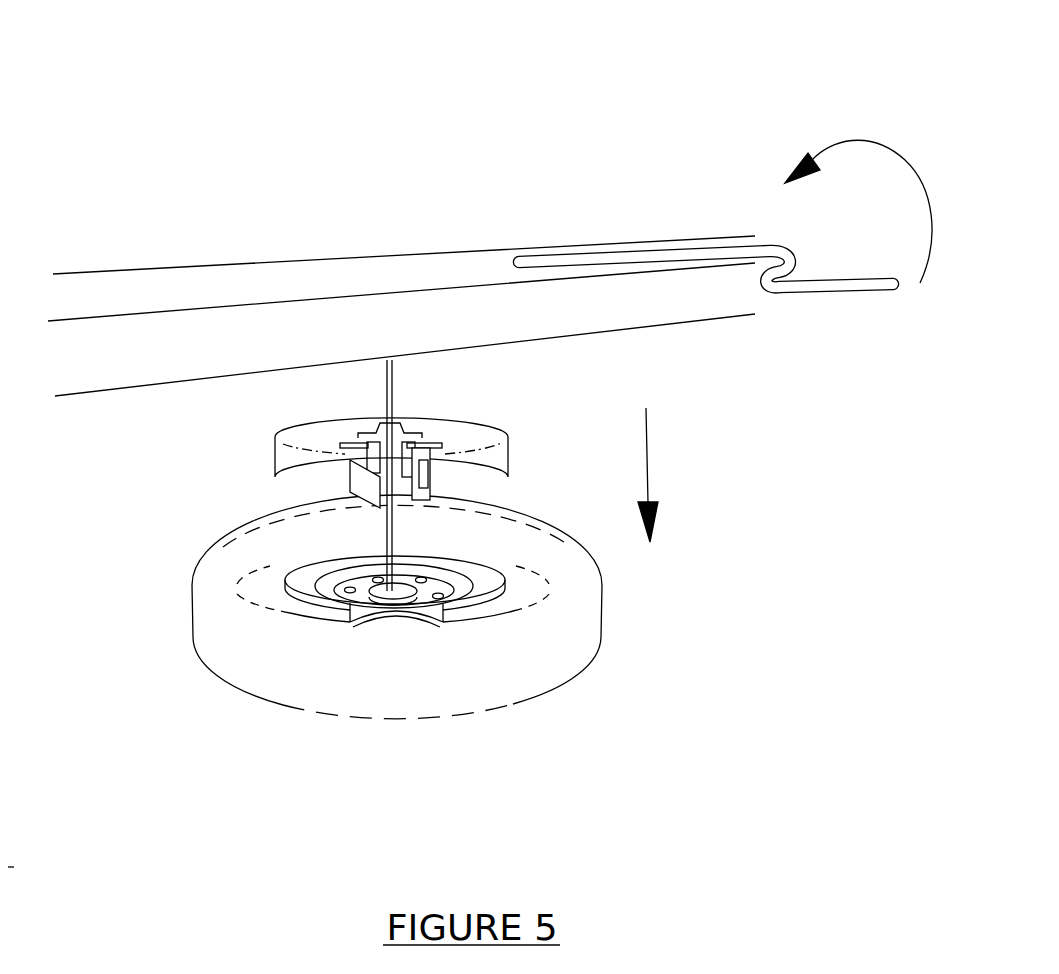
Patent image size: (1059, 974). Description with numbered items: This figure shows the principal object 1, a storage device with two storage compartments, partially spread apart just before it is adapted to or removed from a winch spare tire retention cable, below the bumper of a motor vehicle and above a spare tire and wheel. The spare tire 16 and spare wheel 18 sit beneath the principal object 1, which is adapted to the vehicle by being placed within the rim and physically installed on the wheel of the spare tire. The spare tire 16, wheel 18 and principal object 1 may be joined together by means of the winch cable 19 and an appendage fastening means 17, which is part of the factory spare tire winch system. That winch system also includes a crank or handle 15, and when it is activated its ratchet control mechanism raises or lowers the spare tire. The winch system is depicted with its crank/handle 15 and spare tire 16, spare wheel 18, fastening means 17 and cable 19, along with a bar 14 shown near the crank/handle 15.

The principal object 1 is at (438, 413).
The rod 14 is at (694, 312).
The crank/handle 15 is at (805, 295).
The spare tire 16 is at (602, 622).
The winch appendage fastening means 17 is at (402, 617).
The spare wheel 18 is at (323, 557).
The winch cable 19 is at (382, 385).